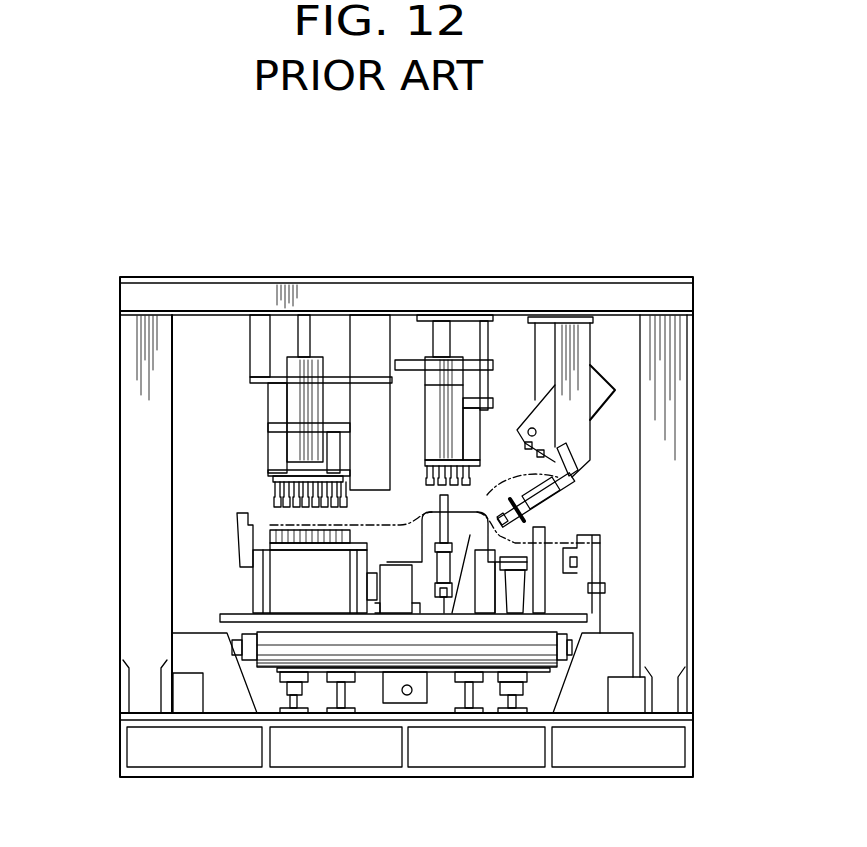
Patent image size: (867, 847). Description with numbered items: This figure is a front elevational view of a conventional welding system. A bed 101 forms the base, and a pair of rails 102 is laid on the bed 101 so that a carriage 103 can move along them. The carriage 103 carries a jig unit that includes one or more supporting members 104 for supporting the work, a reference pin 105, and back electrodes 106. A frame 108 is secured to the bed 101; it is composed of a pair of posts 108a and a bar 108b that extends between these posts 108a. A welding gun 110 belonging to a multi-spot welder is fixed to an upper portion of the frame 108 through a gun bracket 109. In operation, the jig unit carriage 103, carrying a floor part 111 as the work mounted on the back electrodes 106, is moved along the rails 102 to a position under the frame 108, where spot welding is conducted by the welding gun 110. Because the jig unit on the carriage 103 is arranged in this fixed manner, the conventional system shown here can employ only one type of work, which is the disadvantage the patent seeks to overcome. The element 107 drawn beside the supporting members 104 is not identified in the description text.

The base 101 is at (435, 706).
The support legs 102 is at (305, 705).
The X-Y table 103 is at (550, 667).
The transfer level line / guide 104 is at (237, 520).
The angled mounting nozzle 105 is at (448, 532).
The component feeder 106 is at (303, 527).
The clamp 107 is at (240, 560).
The frame 108 is at (595, 278).
The side column of frame 108a is at (126, 490).
The top beam of frame 108b is at (422, 278).
The air cylinder 109 is at (255, 352).
The suction nozzles 110 is at (270, 488).
The swing path 111 is at (558, 490).